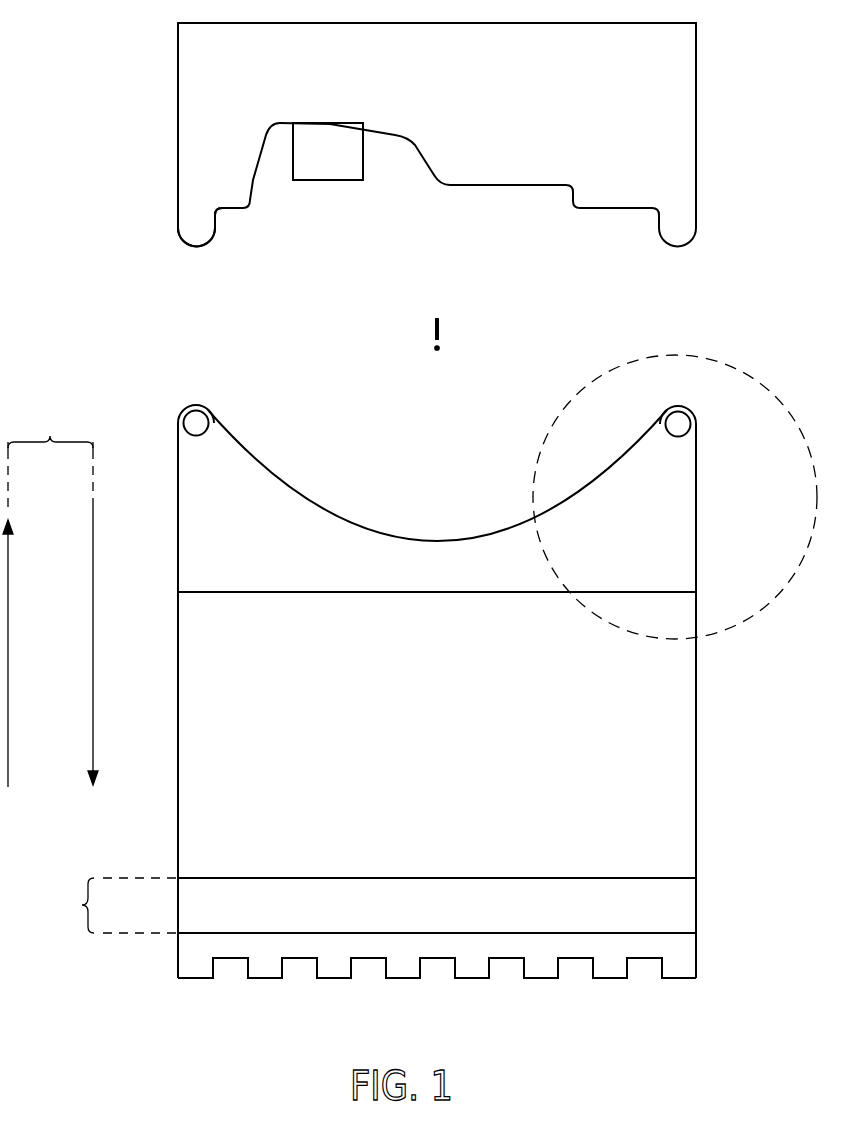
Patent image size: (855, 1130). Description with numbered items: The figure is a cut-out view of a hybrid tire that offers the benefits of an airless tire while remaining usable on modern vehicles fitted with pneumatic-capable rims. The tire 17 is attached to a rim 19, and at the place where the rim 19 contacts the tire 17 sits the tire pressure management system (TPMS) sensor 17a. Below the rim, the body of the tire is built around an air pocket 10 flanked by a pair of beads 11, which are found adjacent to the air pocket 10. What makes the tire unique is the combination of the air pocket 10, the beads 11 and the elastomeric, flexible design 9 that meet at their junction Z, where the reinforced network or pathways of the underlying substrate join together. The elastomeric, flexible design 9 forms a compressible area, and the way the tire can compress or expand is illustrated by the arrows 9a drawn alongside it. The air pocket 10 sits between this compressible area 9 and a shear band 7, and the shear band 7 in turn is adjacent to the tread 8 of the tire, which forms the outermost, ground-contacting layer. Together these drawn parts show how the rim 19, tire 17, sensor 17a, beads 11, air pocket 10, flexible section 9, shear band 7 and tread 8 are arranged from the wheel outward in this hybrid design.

The rim 19 is at (683, 86).
The tire 17 is at (197, 218).
The tire pressure management system (TPMS) sensor 17a is at (325, 166).
The beads 11 is at (197, 424).
The air pocket 10 is at (335, 534).
The junction z is at (753, 379).
The compression or expansion of the tire 9a is at (50, 440).
The elastomeric, flexible design 9 is at (683, 782).
The shear band 7 is at (82, 905).
The tread 8 is at (683, 960).